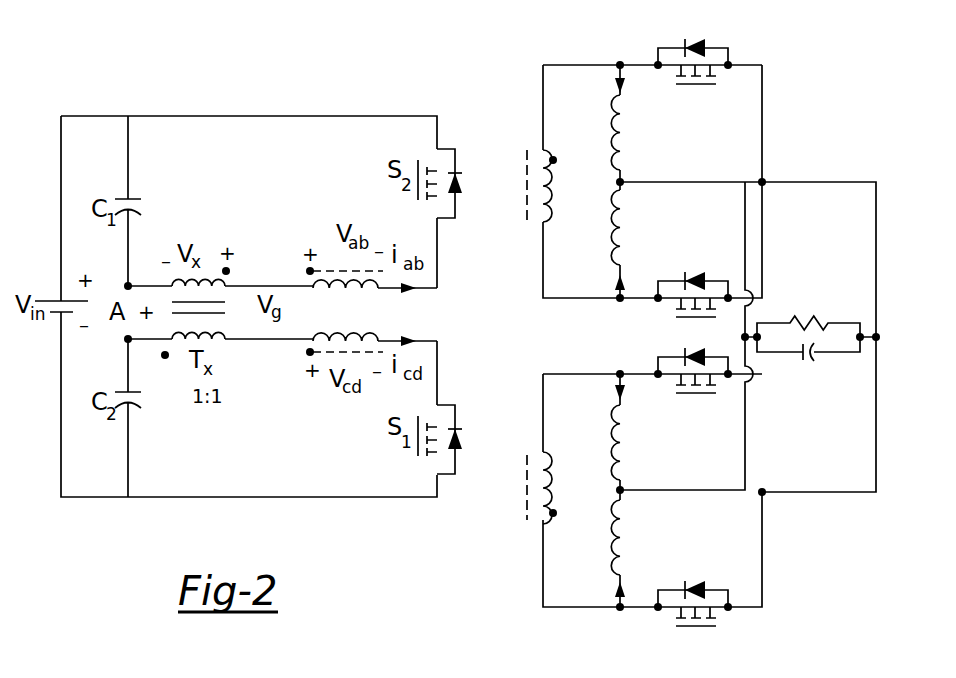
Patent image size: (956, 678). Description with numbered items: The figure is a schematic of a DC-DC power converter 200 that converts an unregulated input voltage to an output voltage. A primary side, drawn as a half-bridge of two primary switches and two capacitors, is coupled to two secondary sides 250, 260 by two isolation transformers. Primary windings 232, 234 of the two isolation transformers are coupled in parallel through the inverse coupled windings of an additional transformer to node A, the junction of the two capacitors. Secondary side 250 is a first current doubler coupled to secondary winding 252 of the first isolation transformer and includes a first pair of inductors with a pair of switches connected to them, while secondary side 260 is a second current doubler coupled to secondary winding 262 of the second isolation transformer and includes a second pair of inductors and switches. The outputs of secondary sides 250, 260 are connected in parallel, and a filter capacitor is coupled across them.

The power converter 200 is at (523, 55).
The primary winding 232 is at (364, 288).
The primary winding 234 is at (373, 333).
The secondary side 250 is at (631, 178).
The secondary winding 252 is at (549, 188).
The secondary side 260 is at (625, 487).
The secondary winding 262 is at (546, 488).